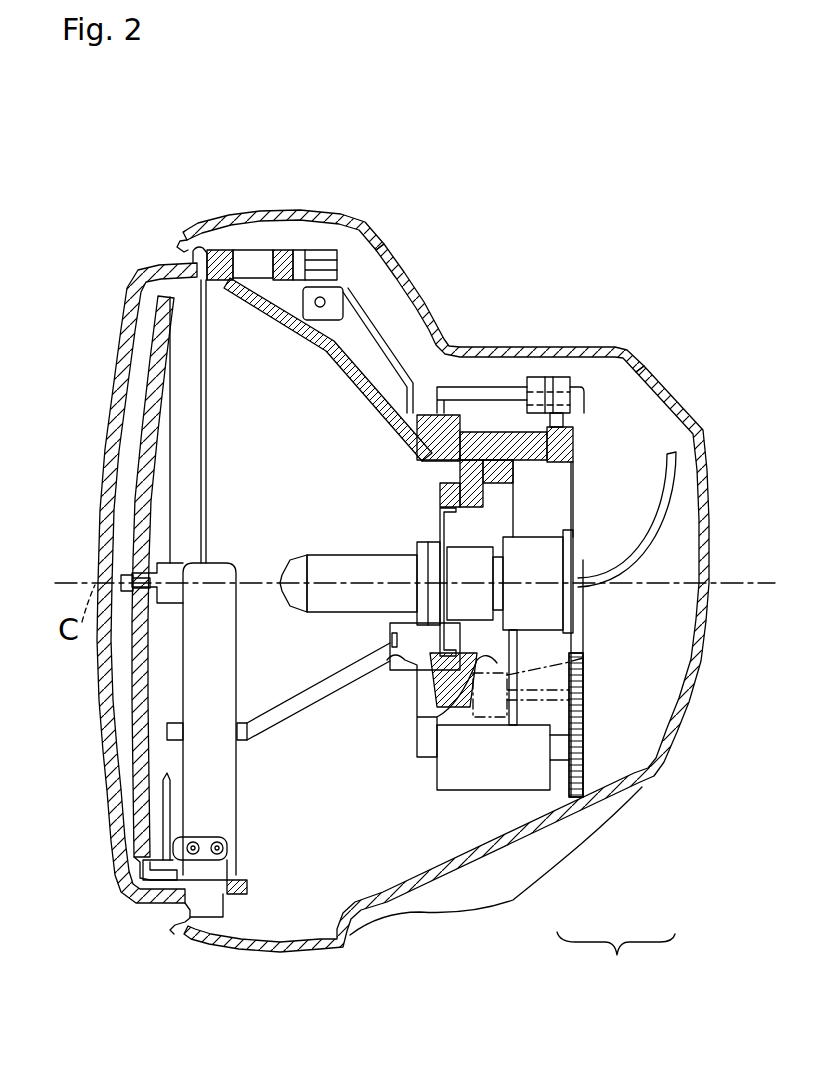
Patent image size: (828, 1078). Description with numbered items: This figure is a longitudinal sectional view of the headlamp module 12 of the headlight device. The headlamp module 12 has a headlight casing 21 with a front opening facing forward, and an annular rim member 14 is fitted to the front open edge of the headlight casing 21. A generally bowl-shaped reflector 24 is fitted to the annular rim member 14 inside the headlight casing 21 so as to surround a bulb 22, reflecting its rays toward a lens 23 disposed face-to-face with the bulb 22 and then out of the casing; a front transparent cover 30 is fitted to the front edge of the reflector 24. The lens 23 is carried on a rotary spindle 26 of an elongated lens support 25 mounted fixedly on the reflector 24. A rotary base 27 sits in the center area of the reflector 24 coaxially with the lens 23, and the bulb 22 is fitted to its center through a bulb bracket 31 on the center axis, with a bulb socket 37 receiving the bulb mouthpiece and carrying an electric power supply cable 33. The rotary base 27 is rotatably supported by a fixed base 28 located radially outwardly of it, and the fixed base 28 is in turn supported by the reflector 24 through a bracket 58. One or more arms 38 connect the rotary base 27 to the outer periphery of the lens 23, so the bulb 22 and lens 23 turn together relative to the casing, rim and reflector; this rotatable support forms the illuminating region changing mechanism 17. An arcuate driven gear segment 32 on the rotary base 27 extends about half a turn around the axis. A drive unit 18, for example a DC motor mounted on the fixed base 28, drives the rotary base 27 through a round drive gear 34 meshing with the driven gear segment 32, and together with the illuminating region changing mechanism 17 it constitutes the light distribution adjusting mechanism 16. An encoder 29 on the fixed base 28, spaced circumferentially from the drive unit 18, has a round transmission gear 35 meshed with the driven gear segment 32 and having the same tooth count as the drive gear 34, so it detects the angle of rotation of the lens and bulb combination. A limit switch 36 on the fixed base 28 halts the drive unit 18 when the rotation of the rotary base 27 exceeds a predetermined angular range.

The headlamp module 12 is at (651, 346).
The annular rim member 14 is at (222, 222).
The light distribution adjusting mechanism 16 is at (616, 966).
The illuminating region changing mechanism 17 is at (593, 707).
The drive unit 18 is at (510, 780).
The headlight casing 21 is at (553, 347).
The bulb 22 is at (352, 604).
The lens 23 is at (137, 470).
The reflector 24 is at (312, 344).
The lens support 25 is at (228, 793).
The rotary spindle 26 is at (123, 583).
The rotary base 27 is at (574, 446).
The fixed base 28 is at (447, 413).
The encoder 29 is at (497, 685).
The front transparent cover 30 is at (113, 380).
The bulb bracket 31 is at (440, 533).
The driven gear segment 32 is at (583, 693).
The electric power supply cable 33 is at (655, 530).
The drive gear 34 is at (583, 750).
The transmission gear 35 is at (584, 660).
The limit switch 36 is at (584, 401).
The bulb socket 37 is at (553, 558).
The arm 38 is at (312, 712).
The bracket 58 is at (373, 343).